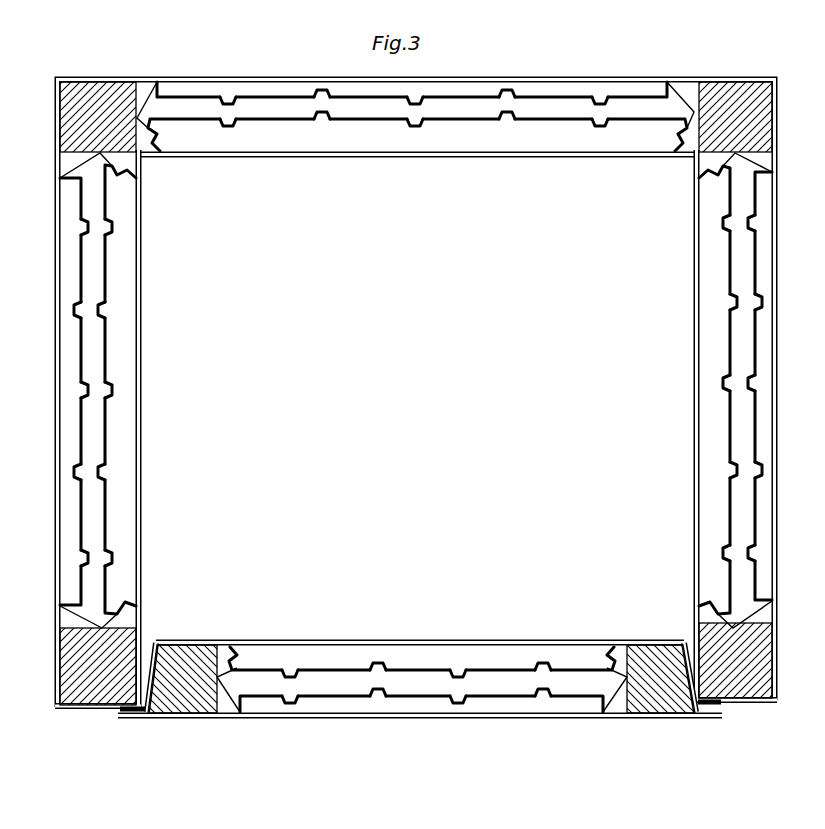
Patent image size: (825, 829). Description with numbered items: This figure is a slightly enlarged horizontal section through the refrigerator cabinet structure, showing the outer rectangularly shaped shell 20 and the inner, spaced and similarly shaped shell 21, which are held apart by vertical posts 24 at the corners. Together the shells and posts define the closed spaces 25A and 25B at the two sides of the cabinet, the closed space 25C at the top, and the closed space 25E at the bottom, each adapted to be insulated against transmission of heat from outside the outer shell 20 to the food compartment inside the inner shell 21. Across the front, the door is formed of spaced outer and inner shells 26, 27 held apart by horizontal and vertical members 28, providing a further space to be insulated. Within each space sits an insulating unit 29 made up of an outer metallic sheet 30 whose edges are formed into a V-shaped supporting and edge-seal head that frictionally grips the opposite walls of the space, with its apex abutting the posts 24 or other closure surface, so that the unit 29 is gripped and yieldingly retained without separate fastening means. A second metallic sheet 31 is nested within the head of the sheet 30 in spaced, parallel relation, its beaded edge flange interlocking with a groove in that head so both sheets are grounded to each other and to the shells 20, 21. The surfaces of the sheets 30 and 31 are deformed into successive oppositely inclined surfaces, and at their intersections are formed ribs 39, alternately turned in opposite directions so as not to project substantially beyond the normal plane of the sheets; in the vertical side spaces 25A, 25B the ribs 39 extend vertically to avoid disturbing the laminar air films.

The outer shell 20 is at (627, 77).
The inner shell 21 is at (598, 157).
The vertical post 24 is at (90, 90).
The closed space 25A is at (824, 282).
The closed space 25B is at (52, 434).
The closed space 25C is at (417, 114).
The closed space 25E is at (420, 683).
The outer door shell 26 is at (322, 720).
The inner door shell 27 is at (365, 608).
The horizontal and vertical members 28 is at (190, 700).
The insulating unit 29 is at (415, 376).
The outer metallic sheet 30 is at (195, 95).
The second metallic sheet 31 is at (270, 122).
The ribs 39 is at (413, 126).